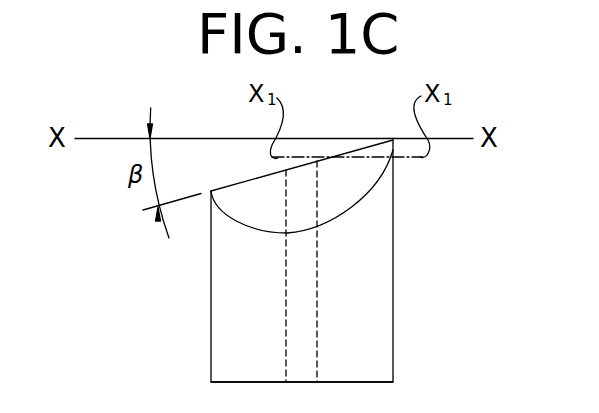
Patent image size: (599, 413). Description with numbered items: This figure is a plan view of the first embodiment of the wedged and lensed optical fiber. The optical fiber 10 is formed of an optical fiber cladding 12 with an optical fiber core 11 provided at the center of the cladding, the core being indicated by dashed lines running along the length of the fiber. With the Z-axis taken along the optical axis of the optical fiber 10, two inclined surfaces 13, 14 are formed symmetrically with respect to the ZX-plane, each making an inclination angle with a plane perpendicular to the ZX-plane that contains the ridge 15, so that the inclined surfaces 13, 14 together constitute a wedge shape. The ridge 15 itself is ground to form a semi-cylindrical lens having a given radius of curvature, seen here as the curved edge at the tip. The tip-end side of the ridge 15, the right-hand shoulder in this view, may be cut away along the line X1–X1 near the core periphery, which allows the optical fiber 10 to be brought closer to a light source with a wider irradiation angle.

The optical fiber 10 is at (393, 268).
The optical fiber core 11 is at (293, 311).
The optical fiber cladding 12 is at (378, 347).
The inclined surface 13 is at (345, 191).
The inclined surface 14 is at (335, 197).
The ridge 15 is at (257, 177).